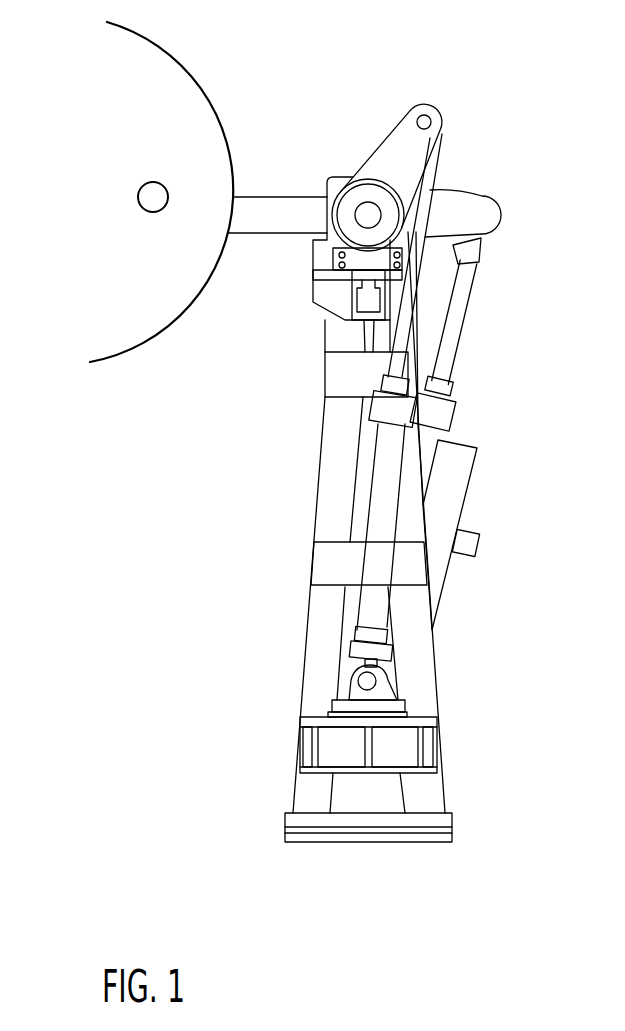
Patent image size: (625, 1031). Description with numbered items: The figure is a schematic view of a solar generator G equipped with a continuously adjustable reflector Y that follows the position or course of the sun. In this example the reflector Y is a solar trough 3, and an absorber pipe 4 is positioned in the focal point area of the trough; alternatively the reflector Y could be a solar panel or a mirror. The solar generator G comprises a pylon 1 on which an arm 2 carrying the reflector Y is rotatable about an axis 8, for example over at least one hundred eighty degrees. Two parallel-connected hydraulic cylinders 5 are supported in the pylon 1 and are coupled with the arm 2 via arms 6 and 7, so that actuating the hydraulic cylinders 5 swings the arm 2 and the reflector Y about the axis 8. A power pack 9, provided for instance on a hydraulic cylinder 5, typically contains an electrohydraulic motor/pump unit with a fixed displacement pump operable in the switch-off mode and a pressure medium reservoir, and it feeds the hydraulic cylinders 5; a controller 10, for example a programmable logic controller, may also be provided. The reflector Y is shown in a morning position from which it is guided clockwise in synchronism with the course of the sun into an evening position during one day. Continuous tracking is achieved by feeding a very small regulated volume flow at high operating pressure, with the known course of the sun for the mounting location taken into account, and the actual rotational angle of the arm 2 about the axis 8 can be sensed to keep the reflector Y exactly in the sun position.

The pylon 1 is at (313, 640).
The arm 2 is at (262, 234).
The solar trough 3 is at (197, 298).
The absorber pipe 4 is at (138, 197).
The hydraulic cylinders 5 is at (402, 338).
The arm 6 is at (483, 196).
The arm 7 is at (442, 129).
The axis 8 is at (345, 178).
The power pack 9 is at (470, 455).
The controller 10 is at (470, 530).
The reflector Y is at (98, 350).
The solar generator G is at (240, 553).